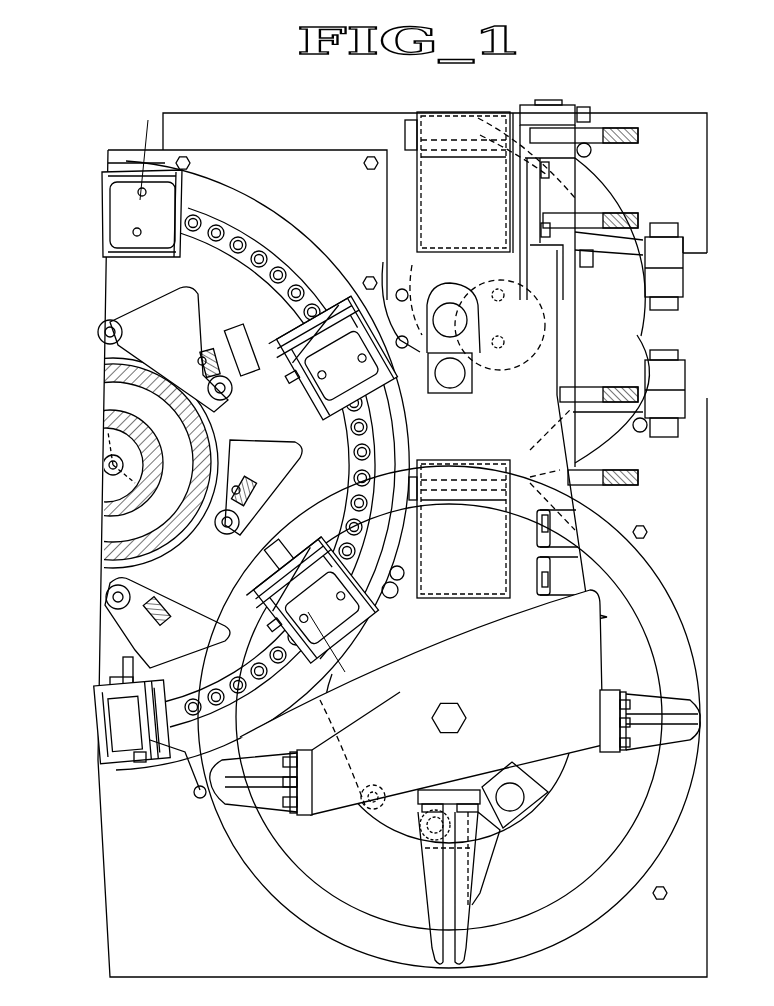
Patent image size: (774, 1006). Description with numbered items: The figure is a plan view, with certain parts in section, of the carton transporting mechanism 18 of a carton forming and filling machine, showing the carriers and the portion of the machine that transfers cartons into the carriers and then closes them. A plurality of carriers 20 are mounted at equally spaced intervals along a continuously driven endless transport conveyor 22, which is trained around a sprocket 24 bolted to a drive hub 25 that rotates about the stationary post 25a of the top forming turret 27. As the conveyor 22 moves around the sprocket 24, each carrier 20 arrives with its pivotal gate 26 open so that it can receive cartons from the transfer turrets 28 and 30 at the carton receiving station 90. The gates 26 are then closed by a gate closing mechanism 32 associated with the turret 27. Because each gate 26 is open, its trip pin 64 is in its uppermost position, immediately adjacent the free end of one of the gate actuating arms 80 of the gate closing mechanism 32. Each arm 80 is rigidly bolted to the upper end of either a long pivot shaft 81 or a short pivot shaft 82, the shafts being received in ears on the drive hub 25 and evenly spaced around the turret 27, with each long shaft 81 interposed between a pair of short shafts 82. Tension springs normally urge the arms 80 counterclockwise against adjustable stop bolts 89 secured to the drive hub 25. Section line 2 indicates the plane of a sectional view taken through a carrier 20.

The carton transporting mechanism 18 is at (302, 122).
The section line 2 is at (147, 133).
The carrier 20 is at (189, 195).
The endless transport conveyor 22 is at (235, 219).
The top forming turret 27 is at (310, 220).
The pivotal gate 26 is at (365, 278).
The gate actuating arm 80 is at (218, 284).
The trip pin 64 is at (238, 322).
The adjustable stop bolt 89 is at (207, 350).
The gate closing mechanism 32 is at (200, 360).
The short pivot shaft 82 is at (217, 388).
The stationary post 25a is at (107, 422).
The long pivot shaft 81 is at (207, 517).
The drive hub 25 is at (205, 592).
The carton receiving station 90 is at (396, 454).
The transfer turret 28 is at (513, 370).
The transfer turret 30 is at (476, 712).
The sprocket 24 is at (189, 740).